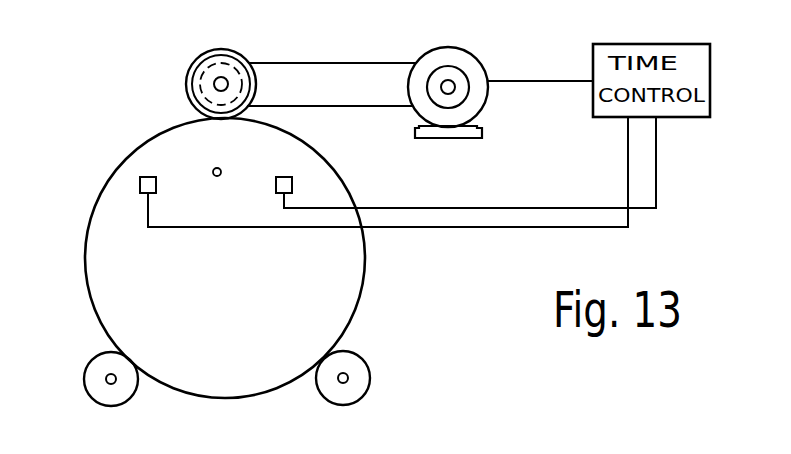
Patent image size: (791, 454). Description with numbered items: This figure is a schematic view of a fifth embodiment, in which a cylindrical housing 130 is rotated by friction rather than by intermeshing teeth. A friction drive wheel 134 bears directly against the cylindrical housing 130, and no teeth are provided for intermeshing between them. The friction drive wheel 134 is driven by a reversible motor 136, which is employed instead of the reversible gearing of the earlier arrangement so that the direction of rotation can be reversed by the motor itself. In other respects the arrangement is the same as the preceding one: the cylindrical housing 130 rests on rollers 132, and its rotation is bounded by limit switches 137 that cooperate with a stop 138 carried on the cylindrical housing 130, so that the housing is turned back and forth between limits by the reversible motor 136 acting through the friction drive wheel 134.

The cylindrical housing 130 is at (100, 213).
The rollers 132 is at (92, 372).
The friction drive wheel 134 is at (199, 58).
The reversible motor 136 is at (471, 64).
The limit switches 137 is at (157, 185).
The stop 138 is at (217, 168).